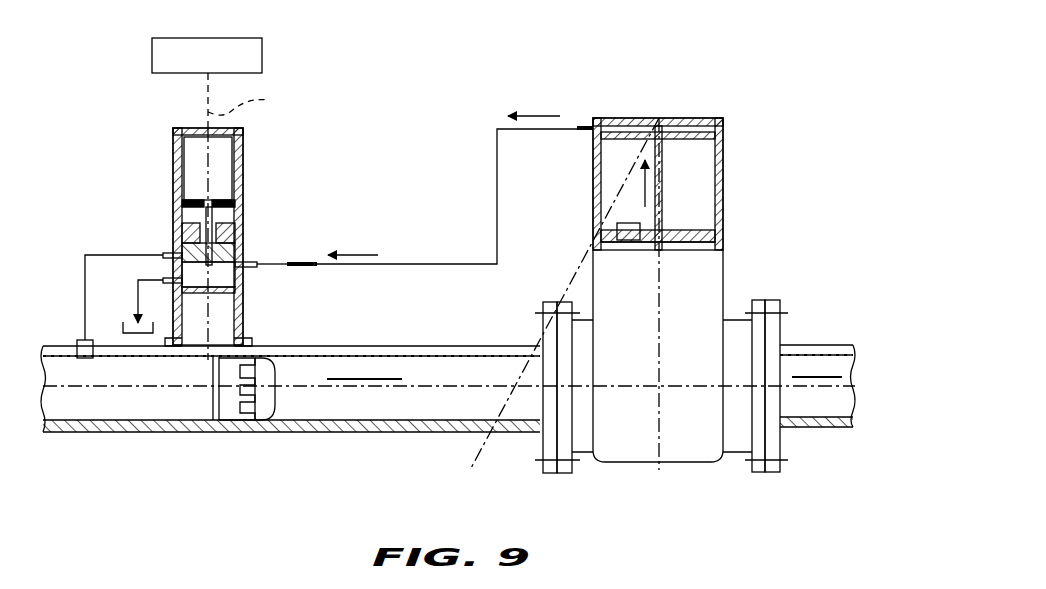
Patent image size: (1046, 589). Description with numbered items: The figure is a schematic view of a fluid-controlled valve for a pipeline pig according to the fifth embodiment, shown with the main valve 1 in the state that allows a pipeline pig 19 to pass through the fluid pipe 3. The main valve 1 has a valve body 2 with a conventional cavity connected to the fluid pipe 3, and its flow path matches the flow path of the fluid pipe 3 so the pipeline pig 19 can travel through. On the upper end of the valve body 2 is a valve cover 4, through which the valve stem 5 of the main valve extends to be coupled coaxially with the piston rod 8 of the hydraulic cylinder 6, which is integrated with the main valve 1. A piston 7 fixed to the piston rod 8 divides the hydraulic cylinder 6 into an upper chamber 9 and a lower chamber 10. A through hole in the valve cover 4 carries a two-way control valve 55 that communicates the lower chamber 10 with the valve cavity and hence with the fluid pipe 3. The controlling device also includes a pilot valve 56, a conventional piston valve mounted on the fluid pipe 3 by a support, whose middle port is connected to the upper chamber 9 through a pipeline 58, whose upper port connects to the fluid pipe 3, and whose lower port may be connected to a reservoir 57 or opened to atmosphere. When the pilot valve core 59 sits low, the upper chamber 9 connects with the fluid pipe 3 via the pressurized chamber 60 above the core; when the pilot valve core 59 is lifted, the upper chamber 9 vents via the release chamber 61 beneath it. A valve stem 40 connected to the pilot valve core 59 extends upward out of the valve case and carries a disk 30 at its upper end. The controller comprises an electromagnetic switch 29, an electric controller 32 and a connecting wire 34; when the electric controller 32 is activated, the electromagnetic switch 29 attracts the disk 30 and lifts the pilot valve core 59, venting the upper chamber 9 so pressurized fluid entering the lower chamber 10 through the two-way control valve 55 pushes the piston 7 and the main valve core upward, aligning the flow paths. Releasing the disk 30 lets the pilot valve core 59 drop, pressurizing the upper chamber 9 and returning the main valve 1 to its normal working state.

The main valve 1 is at (635, 425).
The valve body 2 is at (712, 262).
The fluid pipe 3 is at (385, 406).
The valve cover 4 is at (698, 242).
The valve stem 5 is at (663, 250).
The hydraulic cylinder 6 is at (697, 118).
The piston 7 is at (700, 140).
The piston rod 8 is at (666, 210).
The upper chamber 9 is at (723, 118).
The lower chamber 10 is at (703, 215).
The pipeline pig 19 is at (266, 420).
The electromagnetic switch 29 is at (232, 149).
The disk 30 is at (232, 207).
The electric controller 32 is at (262, 52).
The connecting wire 34 is at (255, 100).
The valve stem 40 is at (200, 218).
The two-way control valve 55 is at (628, 230).
The pilot valve 56 is at (244, 314).
The reservoir 57 is at (126, 326).
The pipeline 58 is at (497, 198).
The pilot valve core 59 is at (238, 239).
The pressurized chamber 60 is at (188, 245).
The release chamber 61 is at (228, 275).